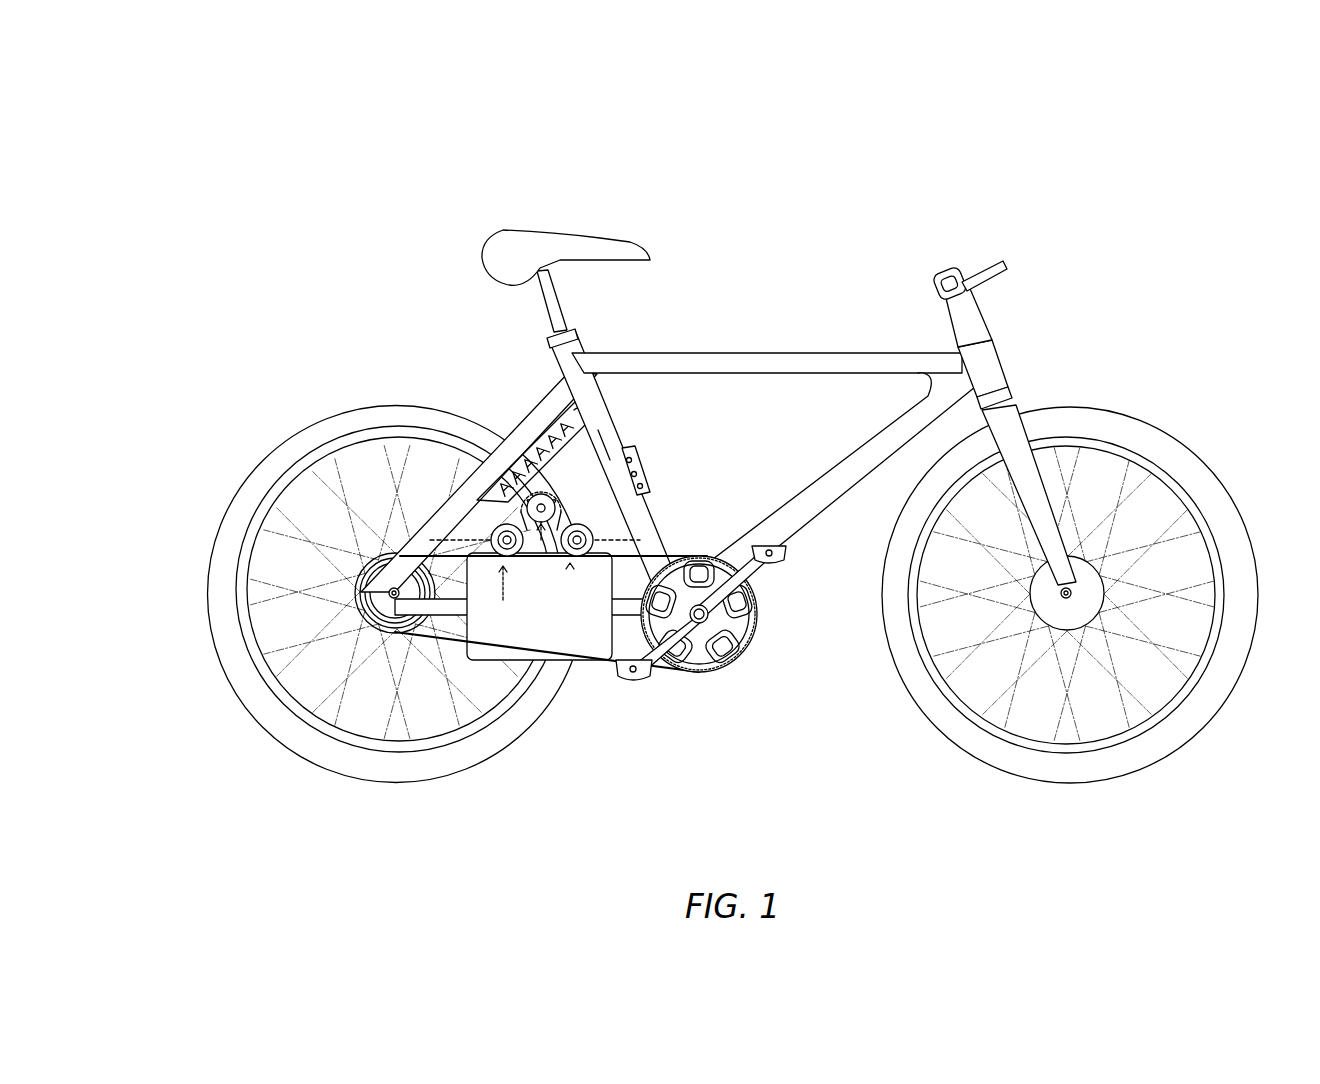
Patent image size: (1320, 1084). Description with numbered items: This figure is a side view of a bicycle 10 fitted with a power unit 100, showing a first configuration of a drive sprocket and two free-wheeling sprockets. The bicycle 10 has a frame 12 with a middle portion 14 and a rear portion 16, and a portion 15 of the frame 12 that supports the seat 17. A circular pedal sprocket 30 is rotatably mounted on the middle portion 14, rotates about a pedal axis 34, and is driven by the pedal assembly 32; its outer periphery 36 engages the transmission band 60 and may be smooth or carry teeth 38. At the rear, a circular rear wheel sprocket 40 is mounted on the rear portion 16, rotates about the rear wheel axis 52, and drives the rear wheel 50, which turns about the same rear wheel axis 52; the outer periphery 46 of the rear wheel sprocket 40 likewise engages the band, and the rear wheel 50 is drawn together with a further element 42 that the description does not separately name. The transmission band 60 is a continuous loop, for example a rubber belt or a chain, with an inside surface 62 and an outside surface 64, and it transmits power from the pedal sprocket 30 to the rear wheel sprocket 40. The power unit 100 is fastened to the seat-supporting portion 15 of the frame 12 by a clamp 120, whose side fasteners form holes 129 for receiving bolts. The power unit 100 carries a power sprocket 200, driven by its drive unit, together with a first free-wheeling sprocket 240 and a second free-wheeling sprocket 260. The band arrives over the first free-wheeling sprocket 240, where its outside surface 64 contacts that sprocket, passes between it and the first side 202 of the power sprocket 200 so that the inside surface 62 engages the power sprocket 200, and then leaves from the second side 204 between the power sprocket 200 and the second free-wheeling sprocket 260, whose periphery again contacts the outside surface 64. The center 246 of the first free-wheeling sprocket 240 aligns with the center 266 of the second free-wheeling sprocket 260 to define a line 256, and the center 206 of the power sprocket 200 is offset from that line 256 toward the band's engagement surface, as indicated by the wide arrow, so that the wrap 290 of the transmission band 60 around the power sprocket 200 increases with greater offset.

The bicycle 10 is at (1098, 172).
The frame 12 is at (767, 353).
The middle portion 14 is at (812, 522).
The portion of the frame for supporting a seat 15 is at (604, 414).
The rear portion 16 is at (371, 601).
The seat 17 is at (598, 238).
The pedal sprocket 30 is at (713, 636).
The pedal assembly 32 is at (770, 562).
The pedal axis 34 is at (718, 650).
The outer periphery 36 is at (662, 666).
The teeth 38 is at (645, 660).
The rear wheel sprocket 40 is at (312, 712).
The tire 42 is at (397, 626).
The outer periphery 46 is at (268, 645).
The rear wheel 50 is at (238, 515).
The rear wheel axis 52 is at (383, 775).
The transmission band 60 is at (491, 700).
The inside surface 62 is at (484, 655).
The outside surface 64 is at (648, 556).
The power unit 100 is at (491, 700).
The clamp 120 is at (608, 462).
The holes 129 is at (645, 470).
The power sprocket 200 is at (568, 557).
The first side 202 is at (585, 528).
The second side 204 is at (450, 527).
The center 206 is at (503, 432).
The first free-wheeling sprocket 240 is at (542, 560).
The center 246 is at (581, 556).
The line 256 is at (530, 560).
The second free-wheeling sprocket 260 is at (503, 567).
The center 266 is at (513, 560).
The wrap 290 is at (524, 445).